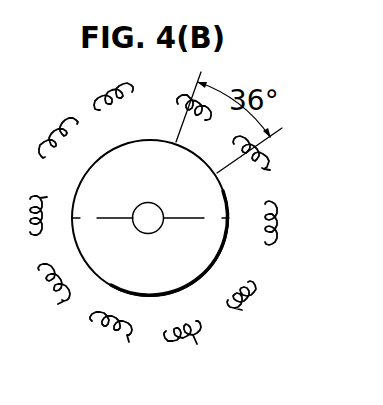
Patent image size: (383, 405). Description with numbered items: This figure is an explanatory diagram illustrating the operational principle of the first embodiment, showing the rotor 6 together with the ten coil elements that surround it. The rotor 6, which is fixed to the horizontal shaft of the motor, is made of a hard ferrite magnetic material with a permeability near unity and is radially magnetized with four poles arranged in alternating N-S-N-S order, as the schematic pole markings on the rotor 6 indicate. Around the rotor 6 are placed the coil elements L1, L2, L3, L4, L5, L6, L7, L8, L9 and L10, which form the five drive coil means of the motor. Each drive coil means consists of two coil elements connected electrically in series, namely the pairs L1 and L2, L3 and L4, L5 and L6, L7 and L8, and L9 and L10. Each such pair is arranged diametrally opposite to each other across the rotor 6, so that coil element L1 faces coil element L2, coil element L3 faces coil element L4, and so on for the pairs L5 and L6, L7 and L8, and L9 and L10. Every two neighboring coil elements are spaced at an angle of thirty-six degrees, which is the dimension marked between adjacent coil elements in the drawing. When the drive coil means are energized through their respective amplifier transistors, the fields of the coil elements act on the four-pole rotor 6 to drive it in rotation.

The rotor 6 is at (67, 213).
The coil element L1 is at (282, 226).
The coil element L2 is at (44, 205).
The coil element L3 is at (249, 303).
The coil element L4 is at (58, 129).
The coil element L5 is at (187, 345).
The coil element L6 is at (114, 88).
The coil element L7 is at (111, 339).
The coil element L8 is at (196, 120).
The coil element L9 is at (49, 292).
The coil element L10 is at (266, 161).